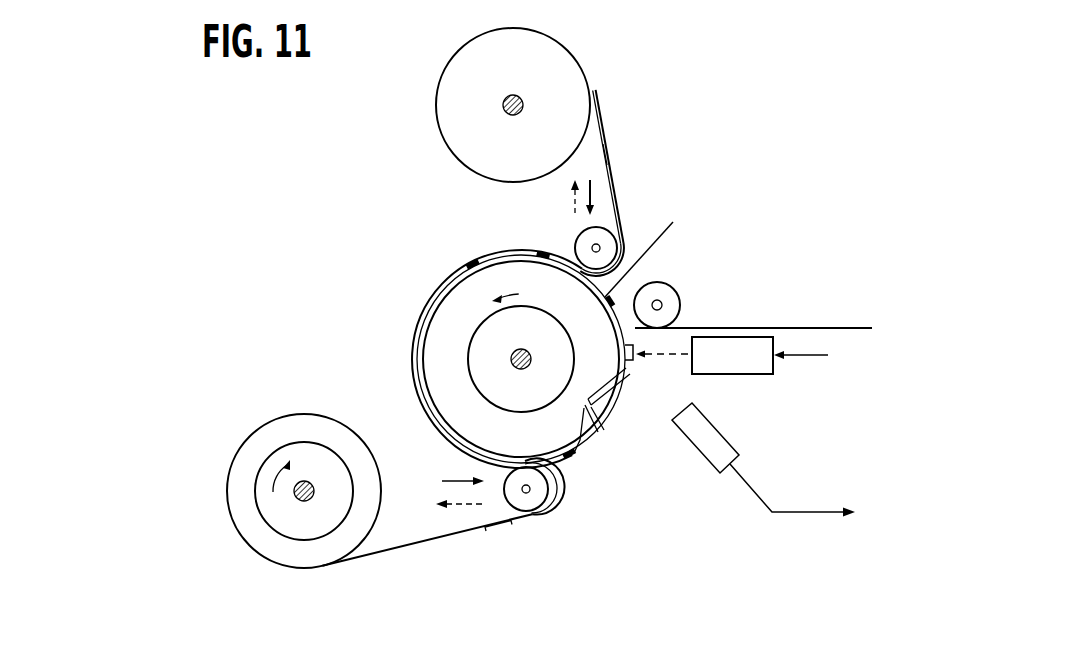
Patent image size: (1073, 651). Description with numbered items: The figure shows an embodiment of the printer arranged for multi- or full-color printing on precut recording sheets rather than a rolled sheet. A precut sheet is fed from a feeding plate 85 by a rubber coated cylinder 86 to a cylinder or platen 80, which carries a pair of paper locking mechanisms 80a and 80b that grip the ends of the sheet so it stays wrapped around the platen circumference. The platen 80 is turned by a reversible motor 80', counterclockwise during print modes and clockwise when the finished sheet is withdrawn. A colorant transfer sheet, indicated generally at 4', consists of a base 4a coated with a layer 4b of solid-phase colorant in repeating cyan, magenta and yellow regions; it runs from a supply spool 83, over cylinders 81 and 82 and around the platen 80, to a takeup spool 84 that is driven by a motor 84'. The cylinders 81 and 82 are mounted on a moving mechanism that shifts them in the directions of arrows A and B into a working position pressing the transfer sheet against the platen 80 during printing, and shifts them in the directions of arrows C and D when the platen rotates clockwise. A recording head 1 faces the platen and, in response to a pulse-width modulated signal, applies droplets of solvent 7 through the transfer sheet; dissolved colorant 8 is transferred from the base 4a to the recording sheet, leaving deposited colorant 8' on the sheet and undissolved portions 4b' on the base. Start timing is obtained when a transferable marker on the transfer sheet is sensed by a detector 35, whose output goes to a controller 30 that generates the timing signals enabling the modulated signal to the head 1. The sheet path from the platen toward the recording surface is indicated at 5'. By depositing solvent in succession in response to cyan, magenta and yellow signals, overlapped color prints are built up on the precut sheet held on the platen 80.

The recording head 1 is at (752, 376).
The base 4a is at (479, 262).
The layer of solid-phase colorant 4b is at (497, 358).
The undissolved portions 4b' is at (496, 563).
The tape 4' is at (619, 134).
The guide 5' is at (648, 253).
The solvent 7 is at (634, 359).
The dissolved colorant 8 is at (486, 235).
The deposited colorant 8' is at (579, 489).
The controller 30 is at (899, 495).
The detector 35 is at (722, 448).
The platen 80 is at (508, 355).
The reversible motor 80' is at (464, 359).
The paper locking mechanism 80a is at (623, 400).
The paper locking mechanism 80b is at (601, 430).
The cylinder 81 is at (573, 234).
The cylinder 82 is at (527, 507).
The supply spool 83 is at (565, 63).
The takeup spool 84 is at (281, 499).
The motor 84' is at (287, 459).
The feeding plate 85 is at (805, 327).
The rubber coated cylinder 86 is at (665, 290).
The arrow A is at (590, 194).
The arrow B is at (455, 482).
The arrow C is at (570, 197).
The arrow D is at (455, 510).